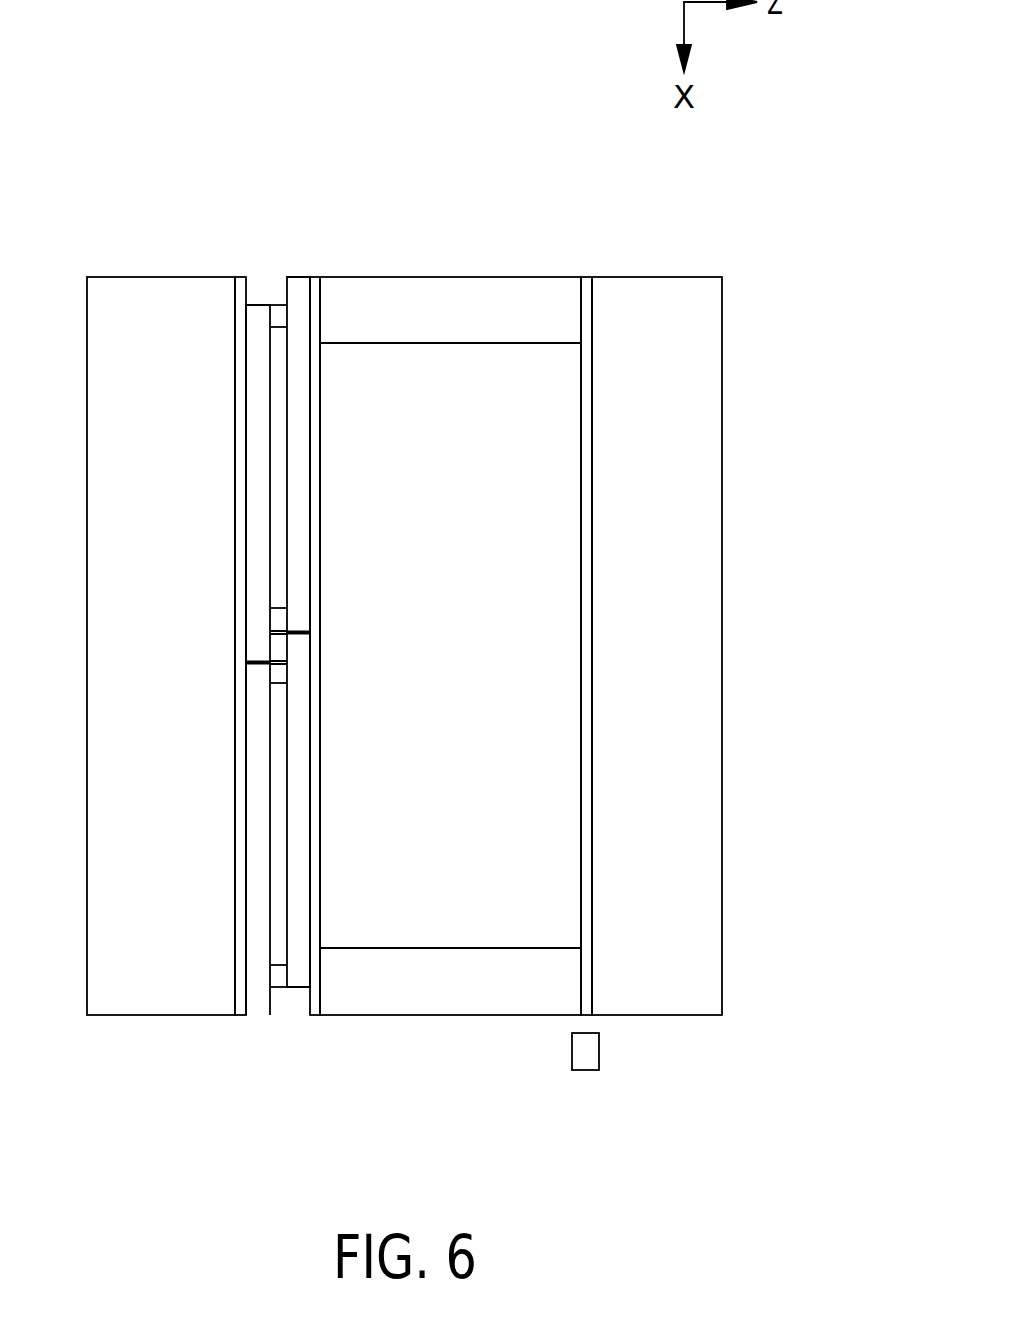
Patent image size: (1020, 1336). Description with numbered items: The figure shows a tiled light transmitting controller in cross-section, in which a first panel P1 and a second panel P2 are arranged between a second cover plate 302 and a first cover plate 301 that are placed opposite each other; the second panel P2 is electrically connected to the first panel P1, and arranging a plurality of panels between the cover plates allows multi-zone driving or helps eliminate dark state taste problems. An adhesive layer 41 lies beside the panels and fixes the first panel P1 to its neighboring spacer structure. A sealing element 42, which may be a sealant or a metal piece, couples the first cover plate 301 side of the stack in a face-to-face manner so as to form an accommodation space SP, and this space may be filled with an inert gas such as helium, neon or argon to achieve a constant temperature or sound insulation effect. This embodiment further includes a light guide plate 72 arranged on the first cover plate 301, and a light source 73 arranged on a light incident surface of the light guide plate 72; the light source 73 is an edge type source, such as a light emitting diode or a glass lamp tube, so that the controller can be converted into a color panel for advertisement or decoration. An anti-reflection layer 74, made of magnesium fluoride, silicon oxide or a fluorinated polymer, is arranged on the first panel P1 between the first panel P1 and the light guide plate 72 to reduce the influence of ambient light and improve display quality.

The second cover plate 302 is at (167, 290).
The first cover plate 301 is at (650, 290).
The adhesive layer 41 is at (241, 1010).
The sealing element 42 is at (427, 290).
The light guide plate 72 is at (585, 290).
The light source 73 is at (584, 1058).
The anti-reflection layer 74 is at (317, 275).
The first panel P1 is at (310, 266).
The second panel P2 is at (310, 1027).
The accommodation space SP is at (505, 355).